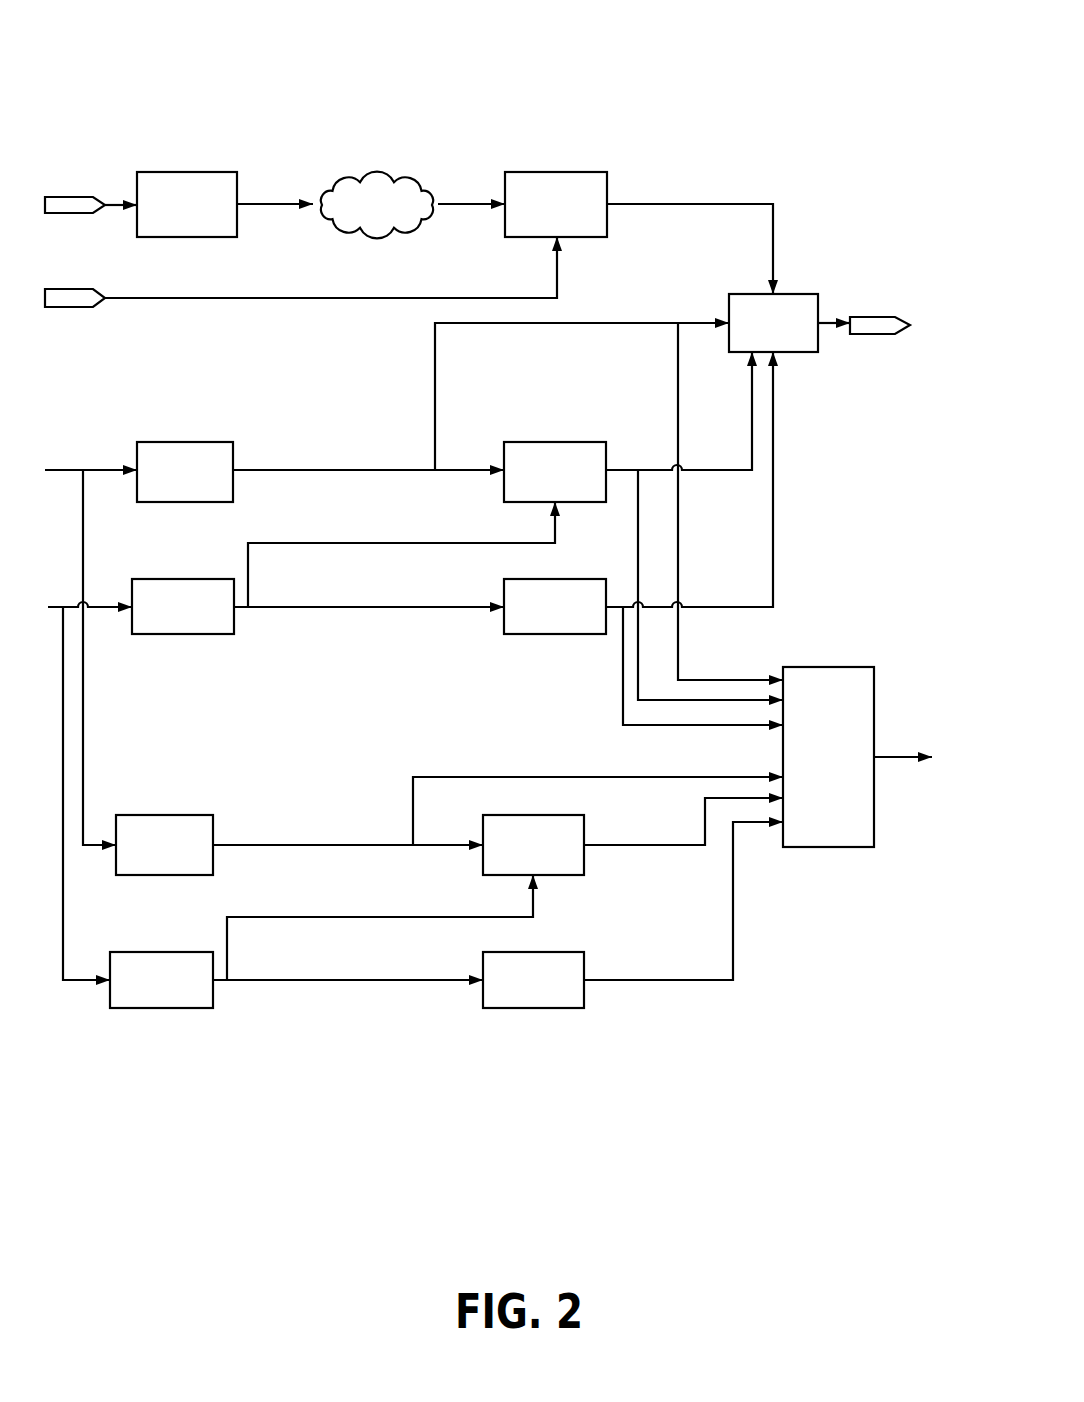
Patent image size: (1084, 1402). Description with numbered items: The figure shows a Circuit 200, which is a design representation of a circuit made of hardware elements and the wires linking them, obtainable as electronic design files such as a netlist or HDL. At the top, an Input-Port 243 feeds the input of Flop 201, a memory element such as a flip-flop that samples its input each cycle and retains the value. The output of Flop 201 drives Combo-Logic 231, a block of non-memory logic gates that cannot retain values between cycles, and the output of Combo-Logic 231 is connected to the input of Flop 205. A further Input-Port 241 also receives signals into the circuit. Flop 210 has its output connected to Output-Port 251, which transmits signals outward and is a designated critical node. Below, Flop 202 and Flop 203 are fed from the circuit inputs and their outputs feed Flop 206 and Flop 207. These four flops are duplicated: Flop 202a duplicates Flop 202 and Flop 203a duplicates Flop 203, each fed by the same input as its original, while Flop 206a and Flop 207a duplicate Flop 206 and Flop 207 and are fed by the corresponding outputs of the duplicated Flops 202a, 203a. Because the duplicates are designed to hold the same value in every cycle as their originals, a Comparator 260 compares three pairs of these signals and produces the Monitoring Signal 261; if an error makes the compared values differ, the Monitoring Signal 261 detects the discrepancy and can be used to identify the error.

The circuit 200 is at (700, 102).
The flop 201 is at (183, 172).
The combo-logic 231 is at (380, 173).
The flop 205 is at (563, 240).
The flop 210 is at (803, 294).
The input-port 243 is at (80, 215).
The input-port 241 is at (70, 308).
The output-port 251 is at (873, 337).
The flop 202 is at (183, 442).
The flop 203 is at (183, 579).
The flop 206 is at (555, 442).
The flop 207 is at (555, 579).
The duplicate flop 202a is at (160, 815).
The duplicate flop 203a is at (160, 952).
The duplicate flop 206a is at (533, 815).
The duplicate flop 207a is at (533, 952).
The comparator 260 is at (848, 667).
The monitoring signal 261 is at (895, 752).